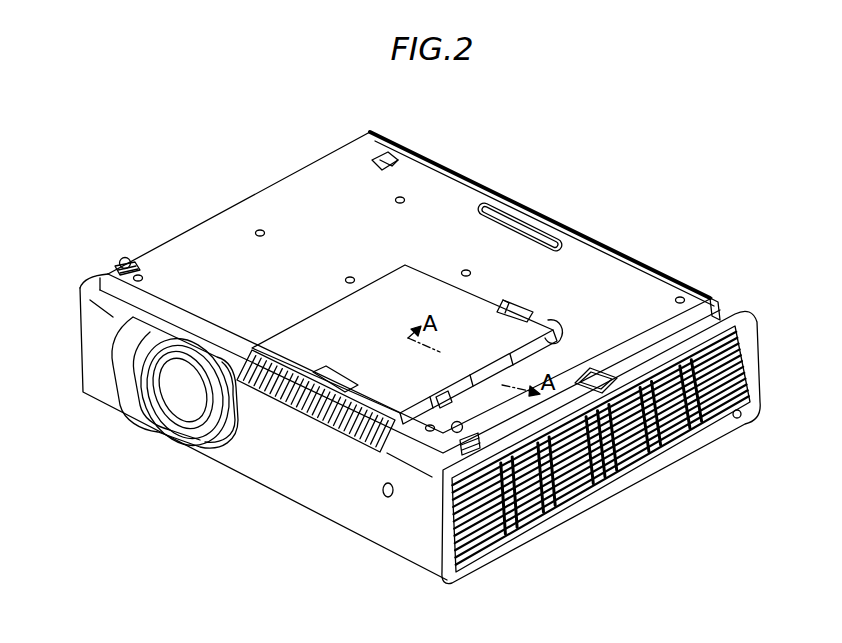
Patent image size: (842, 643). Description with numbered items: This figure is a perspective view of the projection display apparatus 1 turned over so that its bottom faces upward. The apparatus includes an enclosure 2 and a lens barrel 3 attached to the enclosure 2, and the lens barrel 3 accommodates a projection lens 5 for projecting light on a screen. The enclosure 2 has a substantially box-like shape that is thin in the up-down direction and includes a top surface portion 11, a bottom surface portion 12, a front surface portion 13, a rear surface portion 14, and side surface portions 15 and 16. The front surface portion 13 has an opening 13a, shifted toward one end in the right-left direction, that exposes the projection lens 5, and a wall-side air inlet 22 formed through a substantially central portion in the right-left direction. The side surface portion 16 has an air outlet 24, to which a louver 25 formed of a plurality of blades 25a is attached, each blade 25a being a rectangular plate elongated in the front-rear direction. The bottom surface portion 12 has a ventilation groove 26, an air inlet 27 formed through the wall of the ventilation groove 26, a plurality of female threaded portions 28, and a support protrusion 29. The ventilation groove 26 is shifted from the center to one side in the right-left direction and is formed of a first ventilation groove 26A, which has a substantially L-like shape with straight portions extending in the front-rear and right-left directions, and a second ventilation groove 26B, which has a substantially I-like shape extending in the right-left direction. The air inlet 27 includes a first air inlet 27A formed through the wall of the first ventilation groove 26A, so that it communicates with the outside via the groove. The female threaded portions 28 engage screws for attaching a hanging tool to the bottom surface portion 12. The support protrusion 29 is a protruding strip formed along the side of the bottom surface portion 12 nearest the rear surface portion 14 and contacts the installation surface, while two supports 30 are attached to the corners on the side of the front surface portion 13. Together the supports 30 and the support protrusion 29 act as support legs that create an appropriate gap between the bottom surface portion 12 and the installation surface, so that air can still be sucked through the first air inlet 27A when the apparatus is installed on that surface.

The projection display apparatus 1 is at (401, 329).
The enclosure 2 is at (441, 150).
The lens barrel 3 is at (170, 435).
The projection lens 5 is at (177, 395).
The top surface portion 11 is at (253, 482).
The bottom surface portion 12 is at (277, 193).
The front surface portion 13 is at (292, 485).
The opening 13a is at (203, 440).
The rear surface portion 14 is at (690, 288).
The side surface portion 15 is at (213, 213).
The side surface portion 16 is at (637, 477).
The wall-side air inlet 22 is at (348, 437).
The air outlet 24 is at (560, 513).
The louver 25 is at (717, 438).
The blade 25a is at (739, 418).
The ventilation groove 26 is at (600, 190).
The first ventilation groove 26A is at (556, 330).
The second ventilation groove 26B is at (520, 302).
The air inlet 27 is at (480, 396).
The first air inlet 27A is at (448, 404).
The female threaded portion 28 is at (466, 268).
The support protrusion 29 is at (513, 218).
The support 30 is at (125, 258).